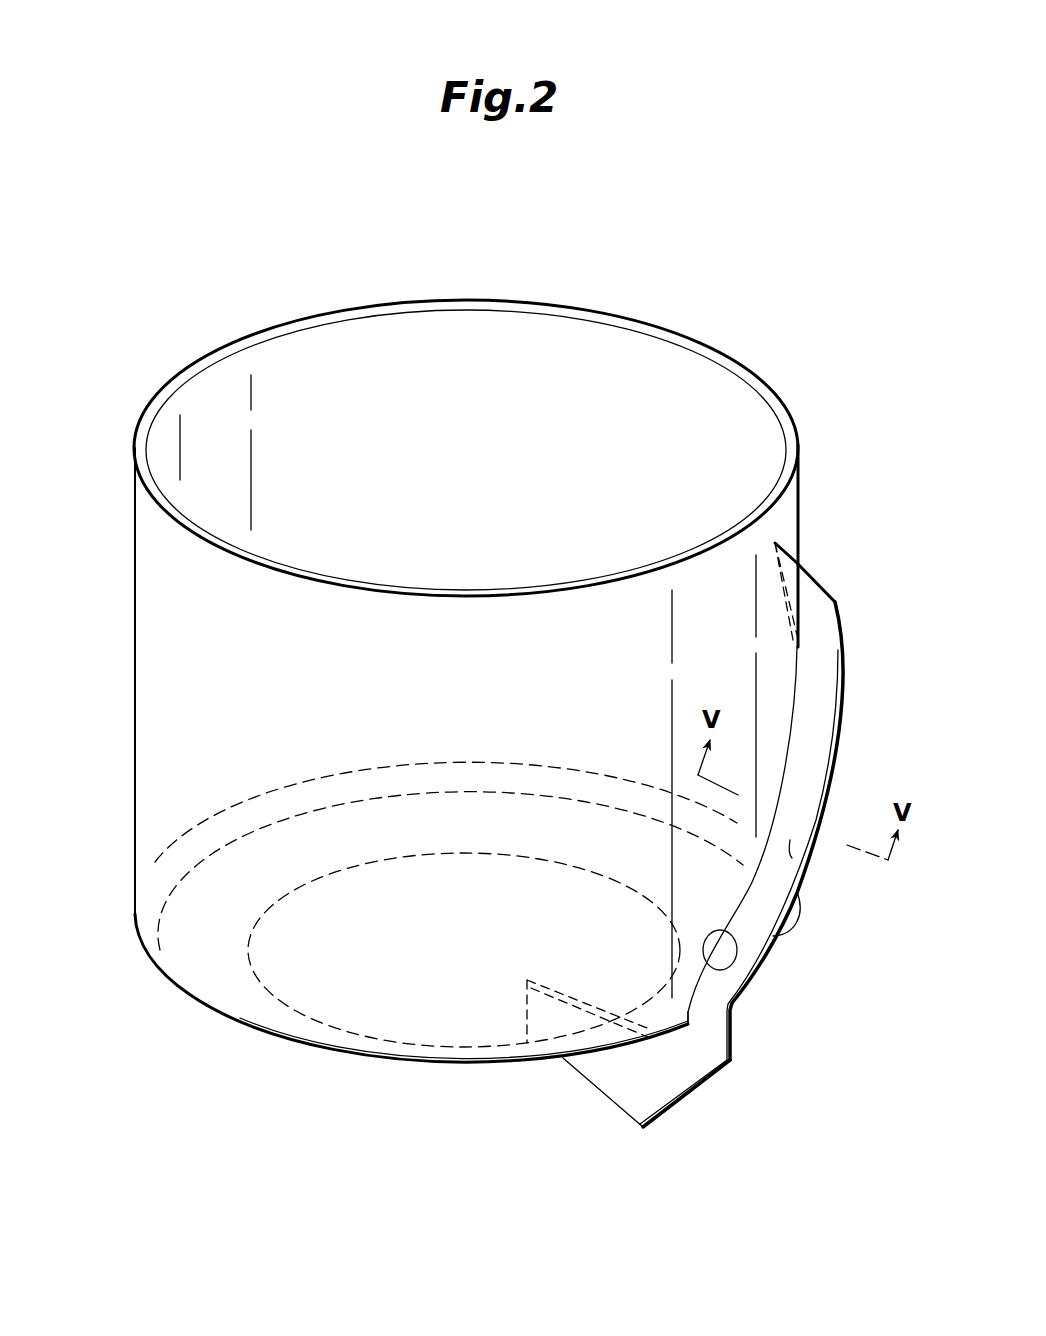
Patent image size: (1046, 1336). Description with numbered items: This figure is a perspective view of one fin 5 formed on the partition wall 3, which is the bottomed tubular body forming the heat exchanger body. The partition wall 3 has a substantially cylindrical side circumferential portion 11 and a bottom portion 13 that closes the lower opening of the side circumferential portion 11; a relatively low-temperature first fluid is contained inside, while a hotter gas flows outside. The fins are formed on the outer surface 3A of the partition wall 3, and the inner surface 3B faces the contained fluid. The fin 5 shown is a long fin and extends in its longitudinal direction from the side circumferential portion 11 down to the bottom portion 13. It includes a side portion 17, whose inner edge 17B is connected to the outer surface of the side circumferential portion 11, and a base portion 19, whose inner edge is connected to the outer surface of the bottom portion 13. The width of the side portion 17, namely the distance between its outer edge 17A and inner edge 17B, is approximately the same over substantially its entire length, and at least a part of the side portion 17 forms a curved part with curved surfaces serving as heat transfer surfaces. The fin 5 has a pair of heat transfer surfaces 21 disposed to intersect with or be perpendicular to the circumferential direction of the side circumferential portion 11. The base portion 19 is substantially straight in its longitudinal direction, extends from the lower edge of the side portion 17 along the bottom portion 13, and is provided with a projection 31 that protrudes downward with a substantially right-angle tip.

The partition wall 3 is at (433, 680).
The outer surface 3A is at (150, 556).
The inner surface of crucible 3B is at (494, 322).
The side circumferential portion 11 is at (426, 721).
The bottom portion 13 is at (374, 1064).
The fin 5 is at (729, 872).
The side portion 17 is at (795, 801).
The outer edge 17A is at (790, 936).
The inner edge 17B is at (760, 978).
The base portion 19 is at (634, 1069).
The heat transfer surface 21 is at (792, 858).
The projection 31 is at (642, 1129).